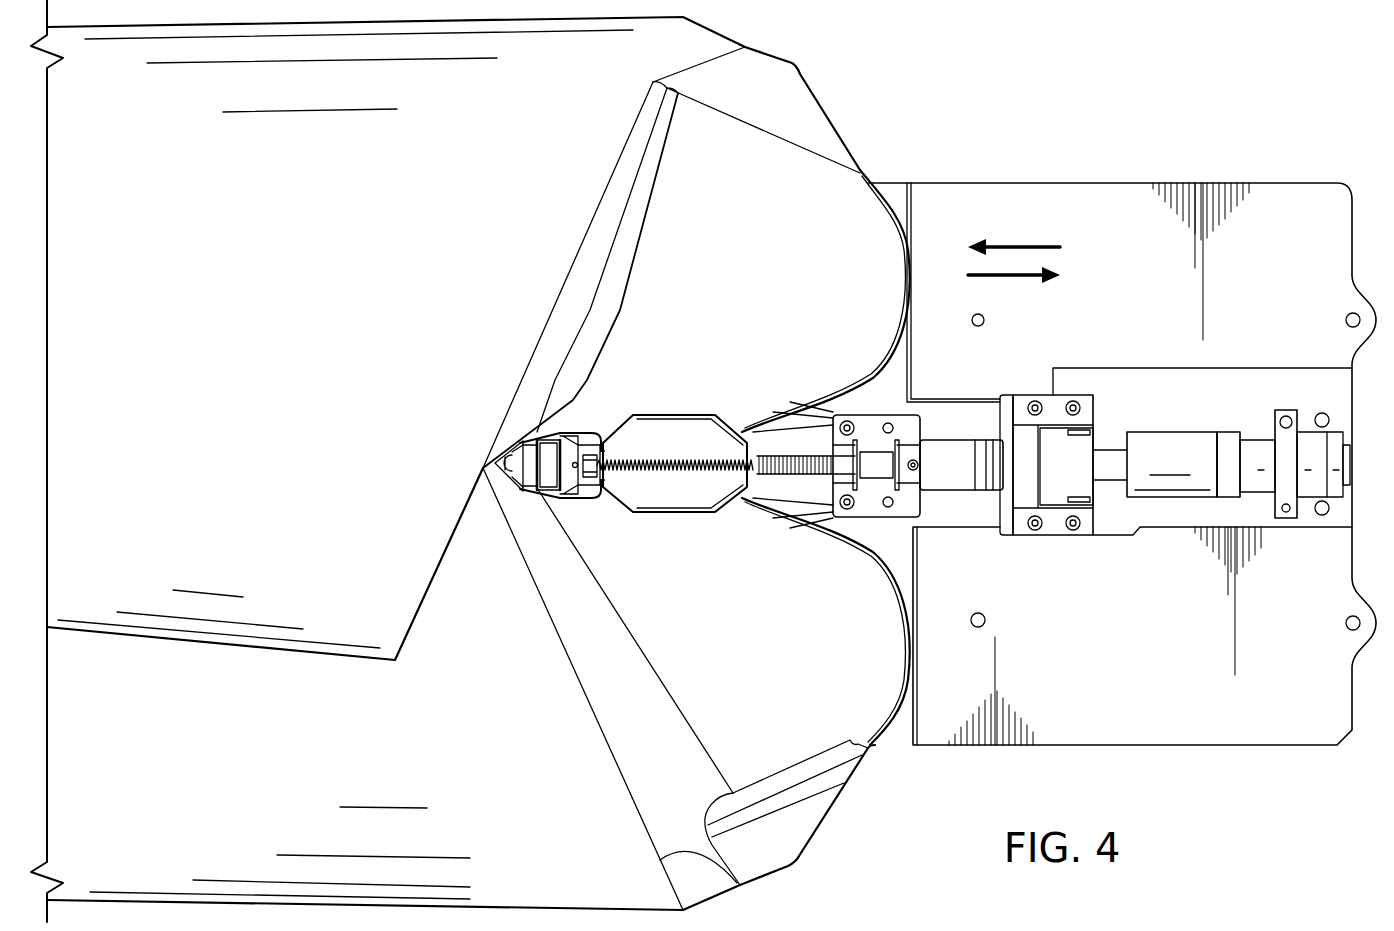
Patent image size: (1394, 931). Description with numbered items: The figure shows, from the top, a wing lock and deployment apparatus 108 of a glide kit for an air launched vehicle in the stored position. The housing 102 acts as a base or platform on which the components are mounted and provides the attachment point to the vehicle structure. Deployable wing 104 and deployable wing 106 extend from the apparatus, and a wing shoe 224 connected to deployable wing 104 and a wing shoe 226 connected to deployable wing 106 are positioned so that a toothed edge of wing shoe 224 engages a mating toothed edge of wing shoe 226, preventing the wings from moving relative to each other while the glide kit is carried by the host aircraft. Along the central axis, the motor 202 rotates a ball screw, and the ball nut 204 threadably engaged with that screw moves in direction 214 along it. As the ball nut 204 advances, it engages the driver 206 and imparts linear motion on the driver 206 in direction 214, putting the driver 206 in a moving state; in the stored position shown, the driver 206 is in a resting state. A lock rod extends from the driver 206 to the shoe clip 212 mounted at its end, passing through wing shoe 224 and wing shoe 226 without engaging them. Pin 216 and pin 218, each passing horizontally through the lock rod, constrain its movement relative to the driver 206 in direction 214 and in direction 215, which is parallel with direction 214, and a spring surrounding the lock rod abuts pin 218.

The housing 102 is at (1103, 183).
The deployable wing 104 is at (221, 777).
The deployable wing 106 is at (221, 262).
The wing lock and deployment apparatus 108 is at (955, 503).
The motor 202 is at (1165, 432).
The ball nut 204 is at (965, 440).
The driver 206 is at (858, 517).
The shoe clip 212 is at (588, 497).
The direction 214 is at (1010, 245).
The direction 215 is at (1003, 278).
The pin 216 is at (887, 440).
The pin 218 is at (847, 483).
The wing shoe 224 is at (672, 512).
The wing shoe 226 is at (672, 415).